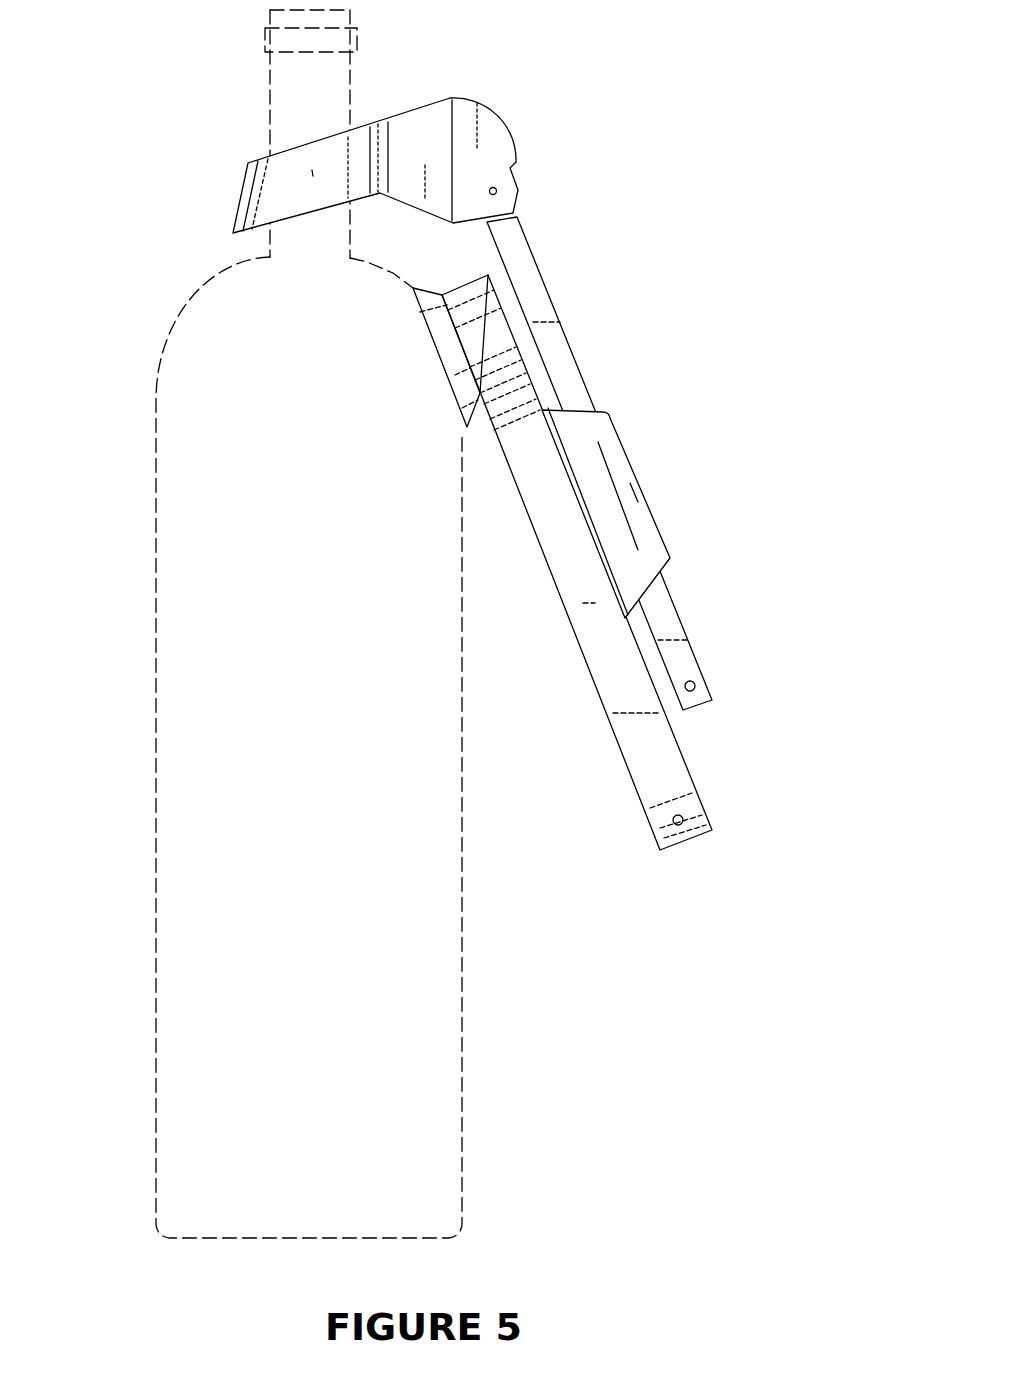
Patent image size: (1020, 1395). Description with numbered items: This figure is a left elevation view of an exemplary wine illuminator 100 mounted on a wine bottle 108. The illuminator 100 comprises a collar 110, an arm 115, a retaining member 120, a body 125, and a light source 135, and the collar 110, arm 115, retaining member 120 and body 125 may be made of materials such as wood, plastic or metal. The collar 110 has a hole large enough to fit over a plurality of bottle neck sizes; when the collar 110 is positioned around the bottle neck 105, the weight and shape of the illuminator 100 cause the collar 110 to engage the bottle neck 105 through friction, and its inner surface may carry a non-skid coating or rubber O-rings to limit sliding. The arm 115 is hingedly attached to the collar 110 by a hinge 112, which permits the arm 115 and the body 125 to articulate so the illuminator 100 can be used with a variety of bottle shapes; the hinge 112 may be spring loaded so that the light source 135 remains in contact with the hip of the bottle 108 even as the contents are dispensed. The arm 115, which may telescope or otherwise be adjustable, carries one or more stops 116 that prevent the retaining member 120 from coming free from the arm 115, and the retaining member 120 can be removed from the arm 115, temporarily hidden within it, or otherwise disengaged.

The wine illuminator 100 is at (527, 444).
The bottle neck 105 is at (350, 88).
The bottle 108 is at (180, 520).
The collar 110 is at (416, 135).
The hinge 112 is at (497, 188).
The arm 115 is at (643, 463).
The stop 116 is at (698, 682).
The retaining member 120 is at (649, 486).
The body 125 is at (687, 772).
The light source 135 is at (443, 388).